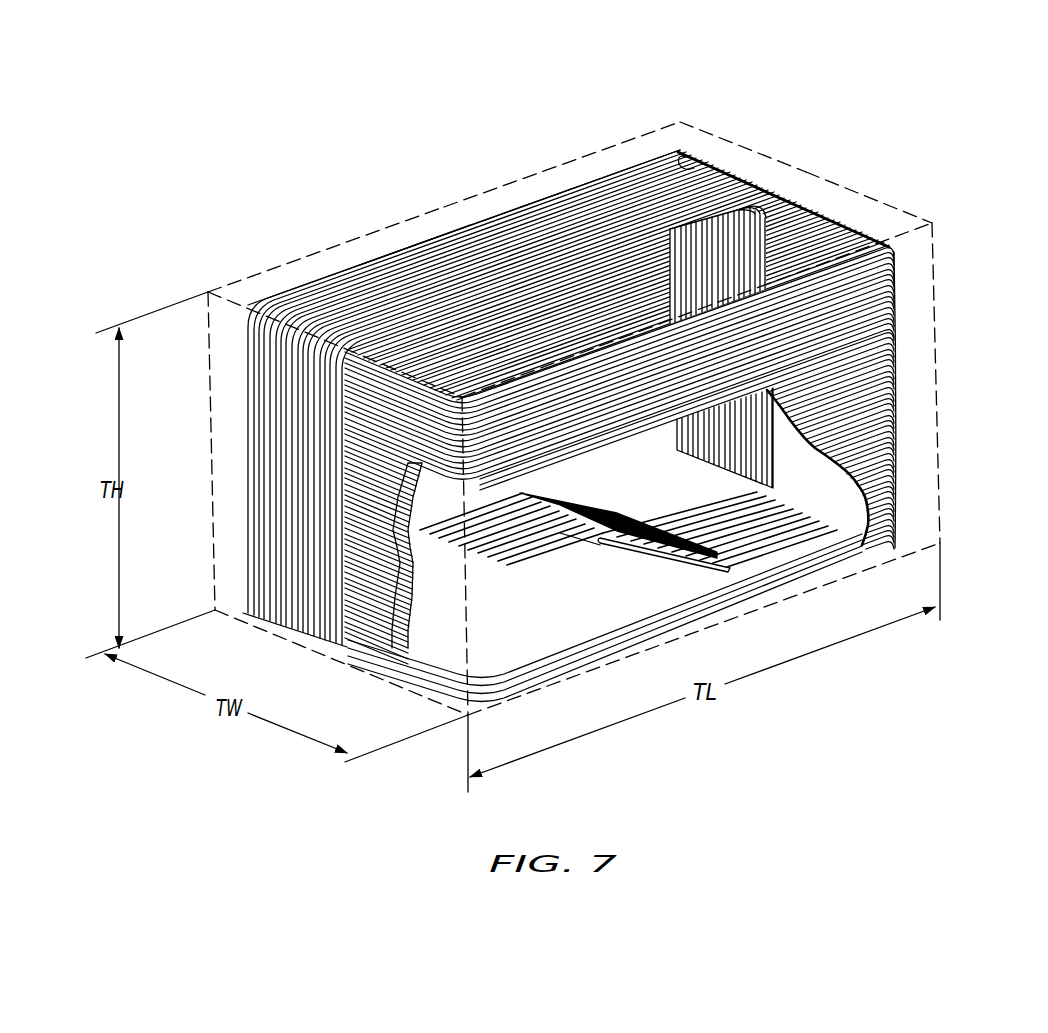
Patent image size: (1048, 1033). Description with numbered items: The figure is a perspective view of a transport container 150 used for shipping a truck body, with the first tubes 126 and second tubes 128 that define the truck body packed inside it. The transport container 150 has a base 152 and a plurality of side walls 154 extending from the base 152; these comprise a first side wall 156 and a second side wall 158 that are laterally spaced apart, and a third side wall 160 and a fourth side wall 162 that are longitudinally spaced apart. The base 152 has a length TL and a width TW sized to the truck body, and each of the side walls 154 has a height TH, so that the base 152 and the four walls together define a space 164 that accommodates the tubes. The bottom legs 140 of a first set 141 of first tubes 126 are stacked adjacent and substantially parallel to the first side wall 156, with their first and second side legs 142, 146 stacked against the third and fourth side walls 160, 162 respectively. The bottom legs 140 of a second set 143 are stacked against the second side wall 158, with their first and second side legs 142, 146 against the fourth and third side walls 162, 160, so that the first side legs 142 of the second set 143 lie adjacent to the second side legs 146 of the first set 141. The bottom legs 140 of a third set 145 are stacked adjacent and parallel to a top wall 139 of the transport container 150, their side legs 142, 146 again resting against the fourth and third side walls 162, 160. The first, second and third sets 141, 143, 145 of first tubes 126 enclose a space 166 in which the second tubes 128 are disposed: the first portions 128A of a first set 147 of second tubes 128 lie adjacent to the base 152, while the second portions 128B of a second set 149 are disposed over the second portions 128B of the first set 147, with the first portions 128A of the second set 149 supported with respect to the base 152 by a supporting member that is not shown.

The first tubes 126 is at (910, 321).
The second tubes 128 is at (628, 514).
The first portions of second tubes 128A is at (673, 513).
The second portions of second tubes 128B is at (593, 502).
The top wall 139 is at (428, 226).
The bottom legs 140 is at (498, 210).
The first set of first tubes 141 is at (907, 385).
The first side legs 142 is at (740, 172).
The second set of first tubes 143 is at (700, 148).
The third set of first tubes 145 is at (614, 156).
The second side legs 146 is at (397, 362).
The first set of second tubes 147 is at (802, 553).
The second set of second tubes 149 is at (580, 550).
The transport container 150 is at (820, 172).
The base 152 is at (385, 683).
The side walls 154 is at (343, 226).
The first side wall 156 is at (890, 232).
The second side wall 158 is at (567, 160).
The third side wall 160 is at (233, 305).
The fourth side wall 162 is at (724, 136).
The space 164 is at (845, 206).
The space 166 is at (700, 582).